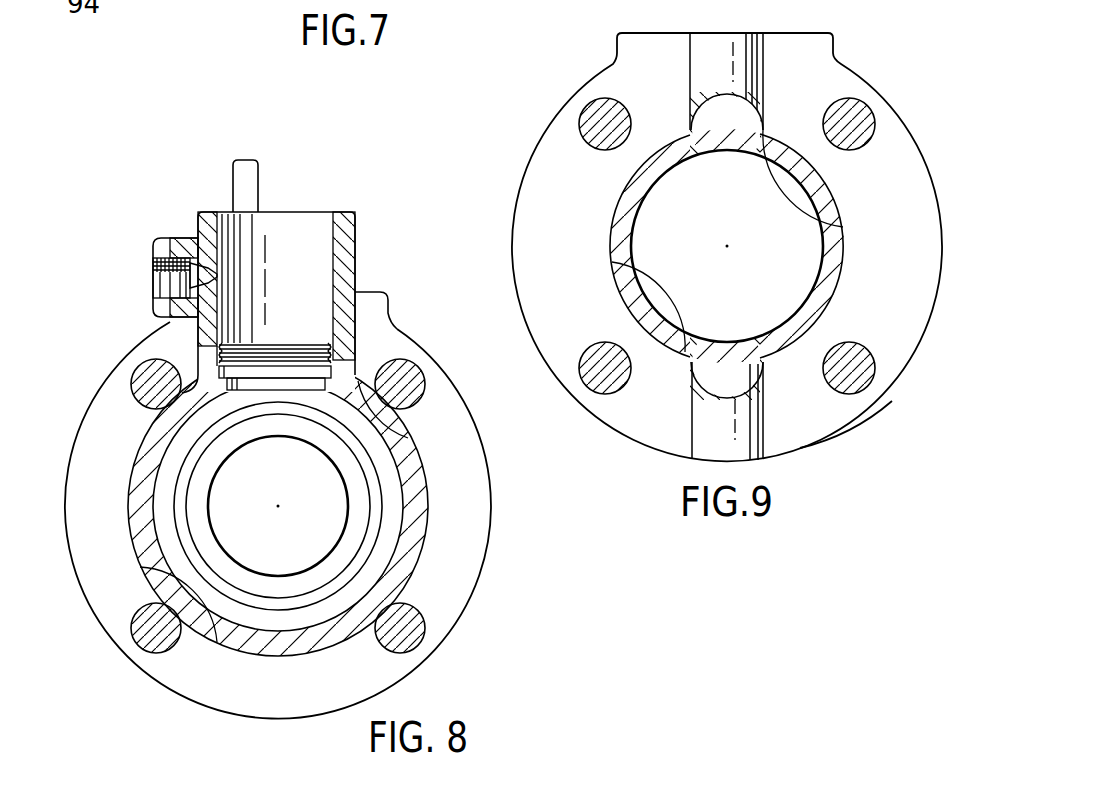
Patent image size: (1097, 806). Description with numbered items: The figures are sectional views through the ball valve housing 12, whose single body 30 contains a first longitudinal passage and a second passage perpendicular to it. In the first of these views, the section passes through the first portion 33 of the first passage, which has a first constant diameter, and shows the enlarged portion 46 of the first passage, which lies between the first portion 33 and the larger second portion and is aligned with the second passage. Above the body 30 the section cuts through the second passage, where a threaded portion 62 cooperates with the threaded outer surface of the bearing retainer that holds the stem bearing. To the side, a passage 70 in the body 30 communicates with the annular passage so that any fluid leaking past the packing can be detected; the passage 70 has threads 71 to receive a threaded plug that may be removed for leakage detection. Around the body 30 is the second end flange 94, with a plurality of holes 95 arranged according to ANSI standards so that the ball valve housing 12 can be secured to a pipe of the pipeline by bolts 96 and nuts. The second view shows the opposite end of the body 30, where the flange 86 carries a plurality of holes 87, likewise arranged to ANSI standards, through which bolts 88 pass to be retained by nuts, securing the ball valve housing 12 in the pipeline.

In FIG. 8, the ball valve housing 12 is at (133, 674).
In FIG. 9, the ball valve housing 12 is at (524, 153).
In FIG. 8, the body 30 is at (436, 523).
In FIG. 9, the body 30 is at (851, 224).
In FIG. 8, the first portion 33 is at (337, 466).
In FIG. 8, the enlarged portion 46 is at (293, 624).
In FIG. 8, the threaded portion 62 is at (322, 342).
In FIG. 8, the passage 70 is at (197, 262).
In FIG. 8, the threads 71 is at (170, 296).
In FIG. 9, the flange 86 is at (837, 433).
In FIG. 9, the holes 87 is at (858, 368).
In FIG. 9, the bolts 88 is at (858, 118).
In FIG. 8, the second end flange 94 is at (480, 573).
In FIG. 8, the holes 95 is at (412, 627).
In FIG. 8, the bolts 96 is at (398, 637).